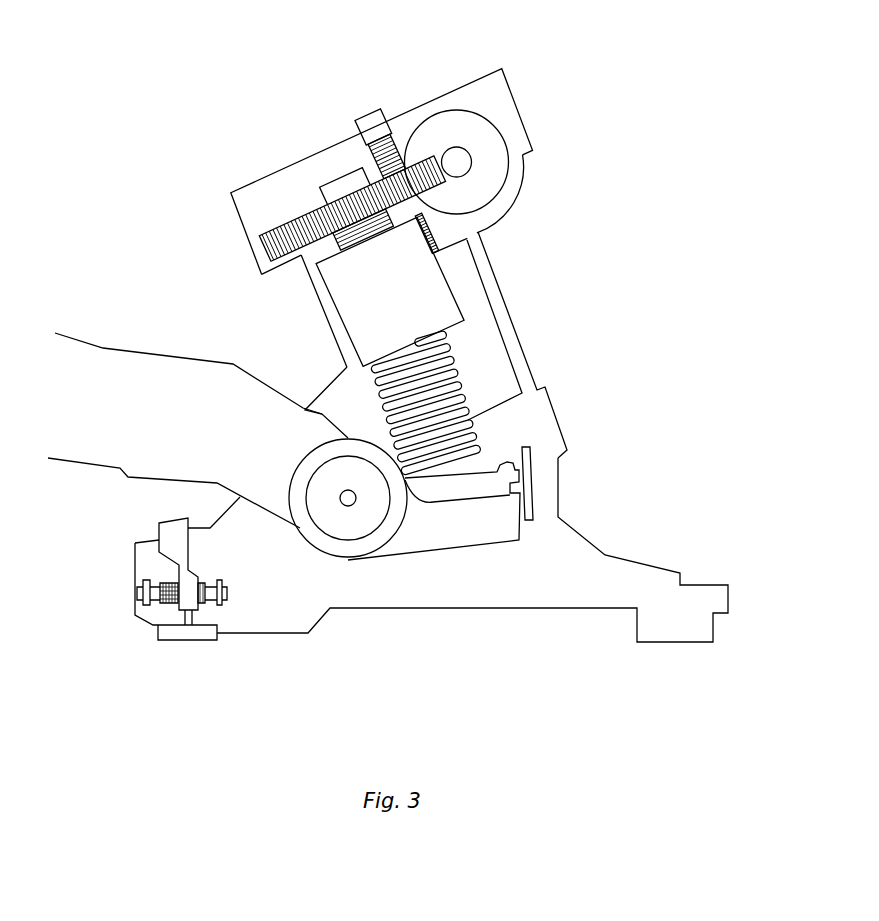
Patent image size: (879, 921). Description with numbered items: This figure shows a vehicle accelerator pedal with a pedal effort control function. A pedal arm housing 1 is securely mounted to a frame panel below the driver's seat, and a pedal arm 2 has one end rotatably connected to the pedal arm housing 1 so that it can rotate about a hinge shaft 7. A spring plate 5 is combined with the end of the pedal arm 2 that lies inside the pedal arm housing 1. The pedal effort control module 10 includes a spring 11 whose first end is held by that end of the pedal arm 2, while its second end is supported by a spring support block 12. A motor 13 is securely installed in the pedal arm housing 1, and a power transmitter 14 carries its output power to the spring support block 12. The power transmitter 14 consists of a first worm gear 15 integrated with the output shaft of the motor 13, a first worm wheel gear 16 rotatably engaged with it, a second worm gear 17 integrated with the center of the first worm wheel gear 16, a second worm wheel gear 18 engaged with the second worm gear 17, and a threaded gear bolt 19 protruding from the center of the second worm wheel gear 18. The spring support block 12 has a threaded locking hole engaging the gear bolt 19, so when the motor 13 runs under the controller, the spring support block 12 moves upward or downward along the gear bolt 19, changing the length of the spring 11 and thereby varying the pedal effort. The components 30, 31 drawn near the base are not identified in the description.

The base 1 is at (562, 480).
The lever 2 is at (108, 362).
The stopper 5 is at (462, 485).
The roller 7 is at (358, 526).
The adjusting unit 10 is at (250, 220).
The spring 11 is at (468, 390).
The moving block 12 is at (423, 297).
The housing 13 is at (486, 340).
The dial assembly 14 is at (508, 120).
The screw head 15 is at (368, 118).
The dial 16 is at (444, 118).
The shaft 17 is at (460, 163).
The rack 18 is at (293, 226).
The pinion 19 is at (345, 182).
The bolt 30 is at (192, 605).
The bracket 31 is at (168, 533).